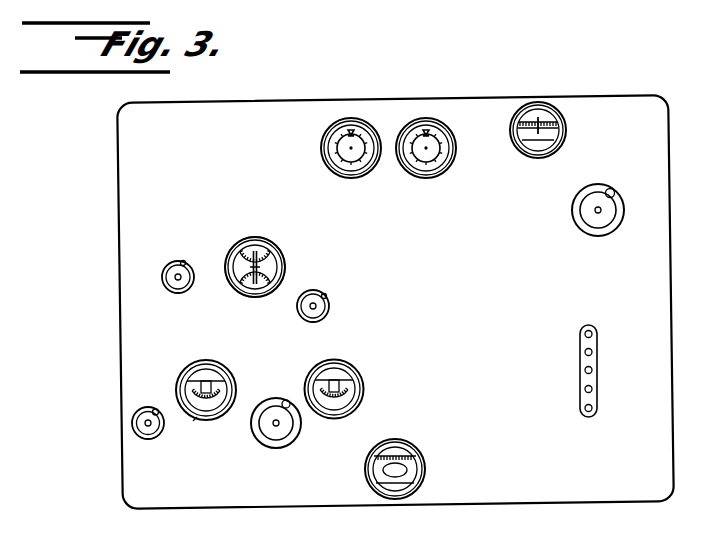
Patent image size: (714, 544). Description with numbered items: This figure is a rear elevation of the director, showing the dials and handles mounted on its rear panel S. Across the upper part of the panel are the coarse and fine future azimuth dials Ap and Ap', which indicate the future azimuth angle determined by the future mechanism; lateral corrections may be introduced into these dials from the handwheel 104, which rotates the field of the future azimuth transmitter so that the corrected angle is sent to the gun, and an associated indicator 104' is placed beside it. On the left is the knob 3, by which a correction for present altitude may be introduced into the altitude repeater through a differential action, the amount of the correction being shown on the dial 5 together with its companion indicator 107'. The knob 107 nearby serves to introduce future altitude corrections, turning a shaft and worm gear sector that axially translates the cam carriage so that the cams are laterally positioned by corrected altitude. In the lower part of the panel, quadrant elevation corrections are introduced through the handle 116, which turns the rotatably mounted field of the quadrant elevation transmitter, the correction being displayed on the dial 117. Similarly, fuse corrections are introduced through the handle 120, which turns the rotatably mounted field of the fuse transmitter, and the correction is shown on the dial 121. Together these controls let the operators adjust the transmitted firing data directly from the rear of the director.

The instrument panel S is at (521, 2).
The coarse future azimuth dial Ap is at (331, 148).
The fine future azimuth dial Ap' is at (442, 149).
The indicator gauge 104' is at (571, 130).
The handwheel 104 is at (597, 226).
The knob 3 is at (171, 264).
The dial 5 is at (259, 251).
The indicating dial 107' is at (287, 267).
The knob 107 is at (343, 306).
The dial 121 is at (206, 392).
The handle 120 is at (150, 440).
The handle 116 is at (288, 437).
The dial 117 is at (343, 402).